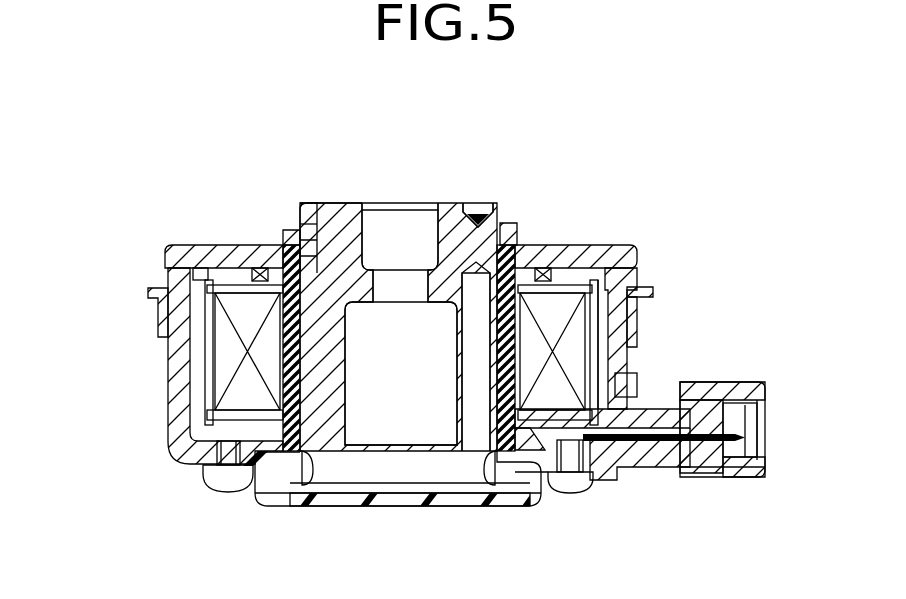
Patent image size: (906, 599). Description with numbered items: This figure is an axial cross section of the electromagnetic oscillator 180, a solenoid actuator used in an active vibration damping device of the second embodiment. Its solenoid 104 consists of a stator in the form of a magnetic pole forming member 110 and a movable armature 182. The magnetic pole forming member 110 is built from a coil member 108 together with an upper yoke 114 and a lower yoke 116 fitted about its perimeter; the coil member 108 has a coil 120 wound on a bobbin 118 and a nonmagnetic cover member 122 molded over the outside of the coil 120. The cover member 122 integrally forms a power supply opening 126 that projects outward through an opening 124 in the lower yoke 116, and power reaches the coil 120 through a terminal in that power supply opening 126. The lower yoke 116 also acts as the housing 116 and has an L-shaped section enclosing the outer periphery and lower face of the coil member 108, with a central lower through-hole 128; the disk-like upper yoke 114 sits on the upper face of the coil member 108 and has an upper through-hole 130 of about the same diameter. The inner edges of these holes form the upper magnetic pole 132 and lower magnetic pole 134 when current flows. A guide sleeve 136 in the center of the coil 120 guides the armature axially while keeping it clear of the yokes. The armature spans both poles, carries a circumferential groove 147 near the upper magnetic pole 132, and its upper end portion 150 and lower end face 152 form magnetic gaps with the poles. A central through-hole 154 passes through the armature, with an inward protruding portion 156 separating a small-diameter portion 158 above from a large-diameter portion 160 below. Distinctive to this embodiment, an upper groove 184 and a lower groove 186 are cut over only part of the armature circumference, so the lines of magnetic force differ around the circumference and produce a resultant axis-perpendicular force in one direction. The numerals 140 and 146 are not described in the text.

The solenoid 104 is at (553, 166).
The coil member 108 is at (624, 362).
The magnetic pole forming member 110 is at (658, 242).
The upper yoke 114 is at (217, 253).
The lower yoke 116 is at (182, 356).
The bobbin 118 is at (567, 347).
The coil 120 is at (632, 299).
The cover member 122 is at (583, 275).
The opening 124 is at (624, 347).
The power supply opening 126 is at (707, 395).
The lower through-hole 128 is at (312, 486).
The upper through-hole 130 is at (312, 212).
The upper magnetic pole 132 is at (510, 232).
The lower magnetic pole 134 is at (493, 455).
The guide sleeve 136 is at (293, 372).
The mounting bracket 140 is at (148, 287).
The bottom plate 146 is at (382, 500).
The circumferential groove 147 is at (290, 232).
The upper end portion 150 is at (310, 203).
The lower end face 152 is at (327, 455).
The through-hole 154 is at (363, 90).
The inward protruding portion 156 is at (367, 290).
The small-diameter portion 158 is at (432, 226).
The large-diameter portion 160 is at (450, 345).
The electromagnetic oscillator 180 is at (552, 125).
The armature 182 is at (344, 202).
The upper groove 184 is at (478, 204).
The lower groove 186 is at (477, 440).